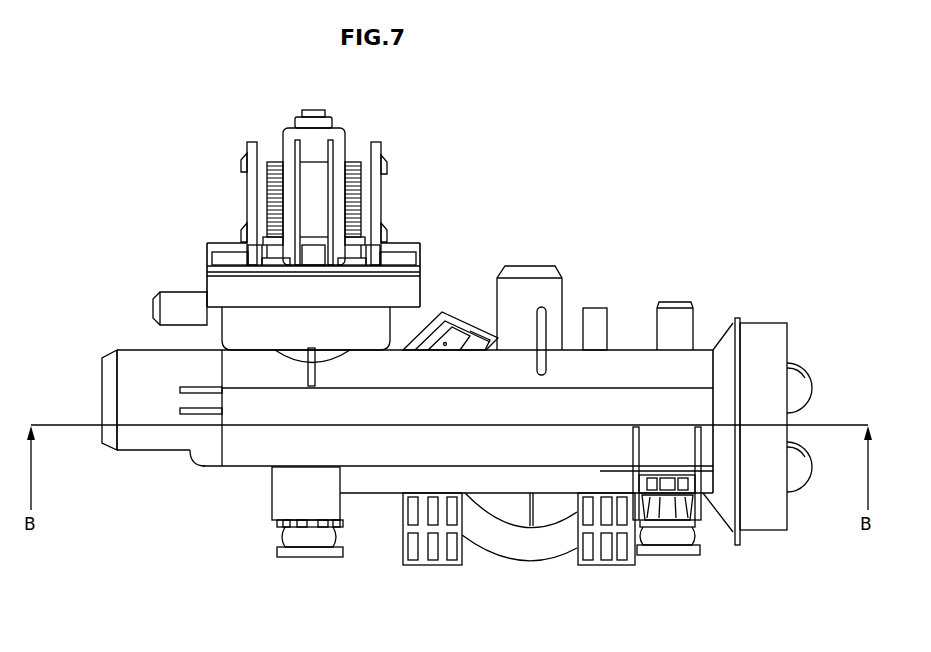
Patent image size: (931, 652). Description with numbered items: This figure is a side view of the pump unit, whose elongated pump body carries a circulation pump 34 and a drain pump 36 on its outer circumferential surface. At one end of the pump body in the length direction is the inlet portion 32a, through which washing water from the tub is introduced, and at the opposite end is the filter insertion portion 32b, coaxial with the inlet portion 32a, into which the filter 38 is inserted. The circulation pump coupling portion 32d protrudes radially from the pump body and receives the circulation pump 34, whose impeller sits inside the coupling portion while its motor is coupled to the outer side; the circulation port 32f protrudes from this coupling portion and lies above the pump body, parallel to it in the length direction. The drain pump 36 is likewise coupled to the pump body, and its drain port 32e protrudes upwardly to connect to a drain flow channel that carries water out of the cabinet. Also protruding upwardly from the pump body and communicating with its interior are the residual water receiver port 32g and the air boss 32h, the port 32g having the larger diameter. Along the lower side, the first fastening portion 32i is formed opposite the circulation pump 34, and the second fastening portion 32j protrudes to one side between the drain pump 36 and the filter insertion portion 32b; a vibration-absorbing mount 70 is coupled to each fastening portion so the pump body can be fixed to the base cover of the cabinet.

The circulation pump 34 is at (382, 158).
The inlet portion 32a is at (138, 450).
The filter insertion portion 32b is at (770, 518).
The circulation pump coupling portion 32d is at (232, 330).
The drain port 32e is at (537, 290).
The circulation port 32f is at (170, 300).
The residual water receiver port 32g is at (672, 312).
The air boss 32h is at (597, 310).
The first fastening portion 32i is at (275, 492).
The second fastening portion 32j is at (712, 430).
The drain pump 36 is at (450, 322).
The filter 38 is at (802, 380).
The mount 70 is at (307, 550).